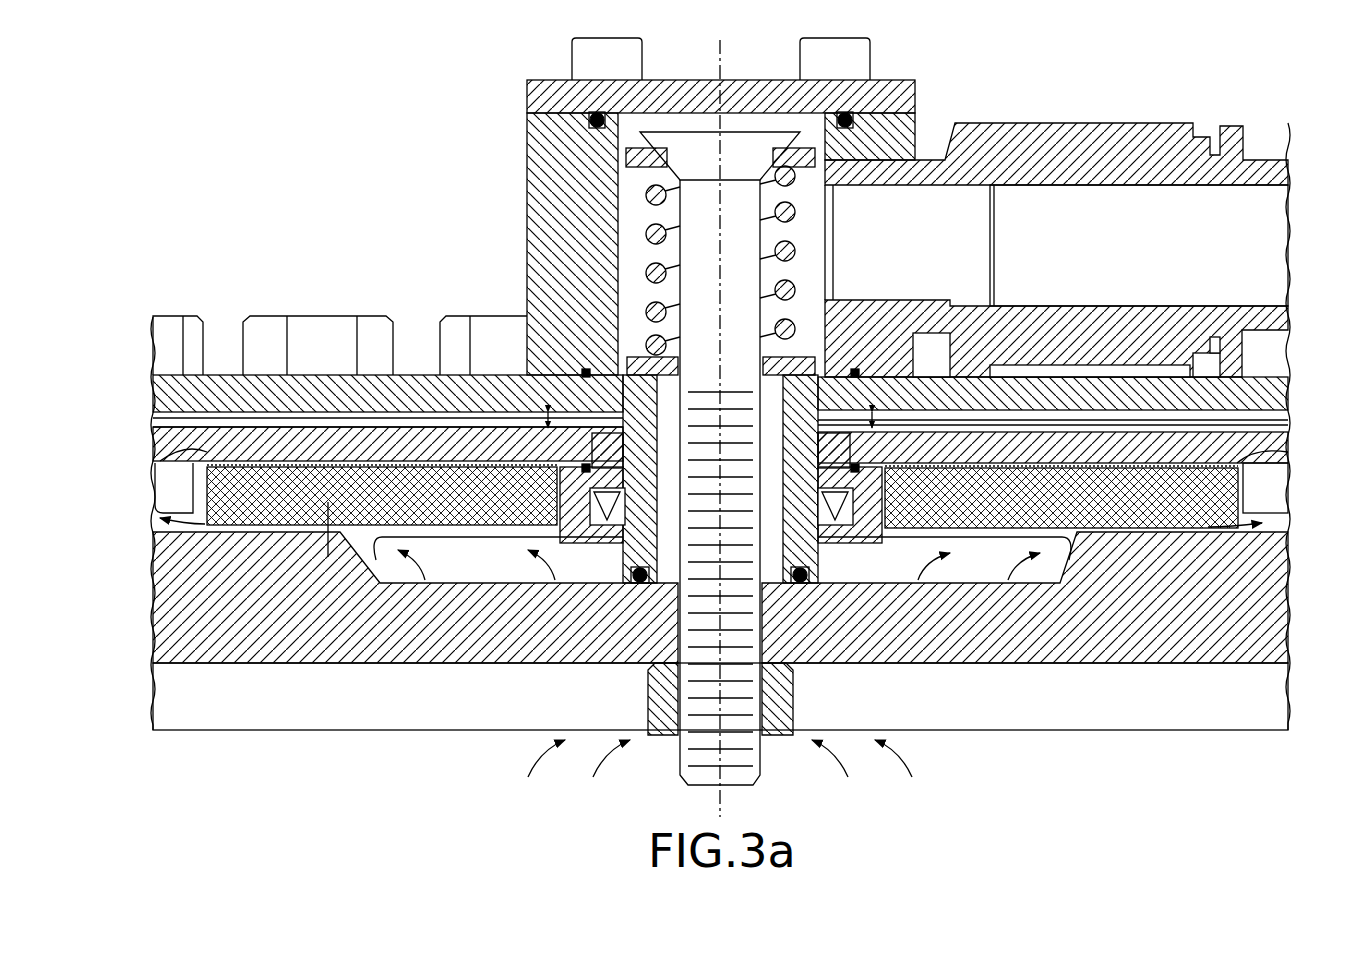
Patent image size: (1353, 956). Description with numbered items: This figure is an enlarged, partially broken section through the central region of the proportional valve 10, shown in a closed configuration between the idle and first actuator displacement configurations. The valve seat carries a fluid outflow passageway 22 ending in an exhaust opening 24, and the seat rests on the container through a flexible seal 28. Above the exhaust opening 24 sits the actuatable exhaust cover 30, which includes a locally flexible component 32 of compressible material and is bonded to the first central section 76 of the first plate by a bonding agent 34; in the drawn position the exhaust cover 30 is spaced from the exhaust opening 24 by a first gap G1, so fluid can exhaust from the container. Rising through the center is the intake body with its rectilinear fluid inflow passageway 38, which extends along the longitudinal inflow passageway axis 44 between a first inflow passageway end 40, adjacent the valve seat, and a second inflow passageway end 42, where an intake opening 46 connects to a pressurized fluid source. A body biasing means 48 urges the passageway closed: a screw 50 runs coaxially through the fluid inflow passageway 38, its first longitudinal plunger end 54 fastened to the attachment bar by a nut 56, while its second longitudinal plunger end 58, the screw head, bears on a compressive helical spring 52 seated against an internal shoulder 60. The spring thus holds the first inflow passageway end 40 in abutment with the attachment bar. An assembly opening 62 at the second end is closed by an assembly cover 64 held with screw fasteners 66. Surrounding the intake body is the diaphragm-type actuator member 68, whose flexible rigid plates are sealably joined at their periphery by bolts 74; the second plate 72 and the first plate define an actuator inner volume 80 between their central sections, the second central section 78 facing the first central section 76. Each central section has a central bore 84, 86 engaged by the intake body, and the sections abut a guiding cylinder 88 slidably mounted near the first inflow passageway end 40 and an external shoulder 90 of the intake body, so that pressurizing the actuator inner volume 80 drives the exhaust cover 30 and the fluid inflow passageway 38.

The proportional valve 10 is at (445, 137).
The fluid outflow passageway 22 is at (473, 570).
The exhaust opening 24 is at (348, 462).
The flexible seal 28 is at (1190, 710).
The actuatable exhaust cover 30 is at (556, 545).
The flexible component 32 is at (1107, 517).
The bonding agent 34 is at (190, 468).
The fluid inflow passageway 38 is at (650, 365).
The first inflow passageway end 40 is at (768, 582).
The second inflow passageway end 42 is at (823, 120).
The longitudinal inflow passageway axis 44 is at (720, 50).
The intake opening 46 is at (792, 512).
The body biasing means 48 is at (888, 140).
The screw 50 is at (680, 540).
The compressive helical spring 52 is at (645, 195).
The first longitudinal plunger end 54 is at (740, 745).
The nut 56 is at (668, 735).
The second longitudinal plunger end 58 is at (663, 132).
The internal shoulder 60 is at (812, 355).
The assembly opening 62 is at (893, 78).
The assembly cover 64 is at (556, 80).
The screw fasteners 66 is at (838, 38).
The actuator member 68 is at (227, 372).
The second plate 72 is at (458, 378).
The bolts 74 is at (263, 316).
The first central section 76 is at (165, 457).
The second central section 78 is at (417, 376).
The actuator inner volume 80 is at (1018, 420).
The central bore of first plate 84 is at (793, 518).
The central bore of second plate 86 is at (880, 375).
The guiding cylinder 88 is at (868, 548).
The external shoulder 90 is at (913, 462).
The first gap G1 is at (288, 537).